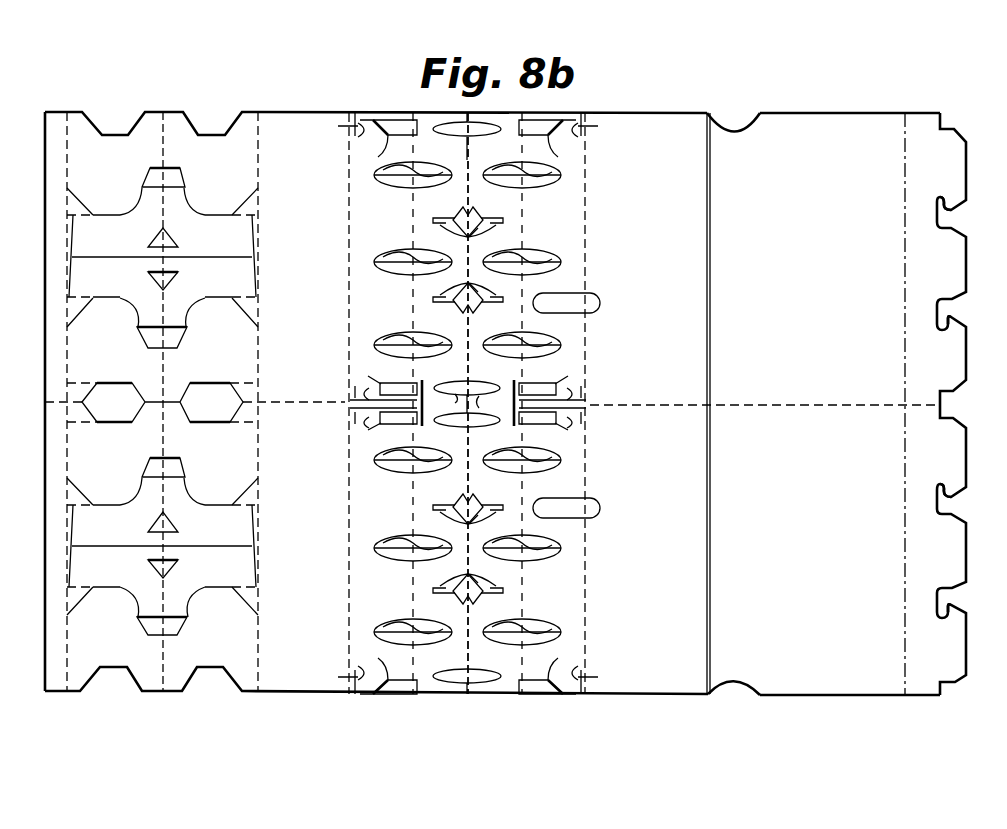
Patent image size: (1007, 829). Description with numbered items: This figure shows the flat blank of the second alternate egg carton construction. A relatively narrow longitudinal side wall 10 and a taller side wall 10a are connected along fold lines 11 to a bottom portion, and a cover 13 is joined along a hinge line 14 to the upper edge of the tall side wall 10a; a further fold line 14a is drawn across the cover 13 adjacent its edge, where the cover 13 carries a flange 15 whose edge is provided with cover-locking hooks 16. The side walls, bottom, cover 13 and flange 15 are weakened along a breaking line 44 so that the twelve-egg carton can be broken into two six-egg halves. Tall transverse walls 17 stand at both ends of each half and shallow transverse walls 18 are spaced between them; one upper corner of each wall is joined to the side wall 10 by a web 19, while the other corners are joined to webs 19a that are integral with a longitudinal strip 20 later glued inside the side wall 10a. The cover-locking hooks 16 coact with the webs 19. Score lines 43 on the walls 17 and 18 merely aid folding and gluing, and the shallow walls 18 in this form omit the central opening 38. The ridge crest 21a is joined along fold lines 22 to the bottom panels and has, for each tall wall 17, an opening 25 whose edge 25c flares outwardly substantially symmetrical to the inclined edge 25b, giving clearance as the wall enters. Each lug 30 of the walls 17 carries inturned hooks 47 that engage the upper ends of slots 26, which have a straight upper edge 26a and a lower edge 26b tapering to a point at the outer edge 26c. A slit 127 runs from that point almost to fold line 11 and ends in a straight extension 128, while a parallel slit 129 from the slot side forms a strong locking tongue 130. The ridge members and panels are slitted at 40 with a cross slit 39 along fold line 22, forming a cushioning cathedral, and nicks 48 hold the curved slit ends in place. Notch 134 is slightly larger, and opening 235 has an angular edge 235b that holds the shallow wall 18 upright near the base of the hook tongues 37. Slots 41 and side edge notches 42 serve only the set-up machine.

The side wall 10 is at (305, 291).
The side wall 10a is at (655, 255).
The fold line 11 is at (348, 234).
The cover 13 is at (850, 404).
The hinge line 14 is at (712, 352).
The fold line 14a is at (904, 340).
The flange 15 is at (950, 166).
The cover-locking hook 16 is at (955, 205).
The transverse wall 17 is at (162, 403).
The transverse wall 18 is at (162, 401).
The web 19 is at (242, 122).
The web 19a is at (82, 122).
The longitudinal strip 20 is at (45, 162).
The crest 21a is at (470, 148).
The fold line 22 is at (397, 206).
The notch 25 is at (480, 398).
The inclined edge 25b is at (458, 137).
The flared edge 25c is at (467, 118).
The slot 26 is at (403, 120).
The upper edge 26a is at (424, 120).
The lower edge 26b is at (388, 120).
The outer edge 26c is at (390, 120).
The lug 30 is at (120, 206).
The hook tongue 37 is at (466, 212).
The opening 38 is at (153, 272).
The cross slit 39 is at (467, 409).
The slit 40 is at (570, 556).
The slot 41 is at (604, 303).
The side edge notch 42 is at (742, 127).
The score line 43 is at (163, 122).
The breaking line 44 is at (818, 386).
The inturned hook 47 is at (142, 192).
The nick 48 is at (467, 403).
The slit 127 is at (364, 120).
The extension 128 is at (338, 126).
The slit 129 is at (382, 153).
The locking tongue 130 is at (362, 132).
The notch 134 is at (478, 232).
The opening 235 is at (440, 220).
The edge 235b is at (440, 228).